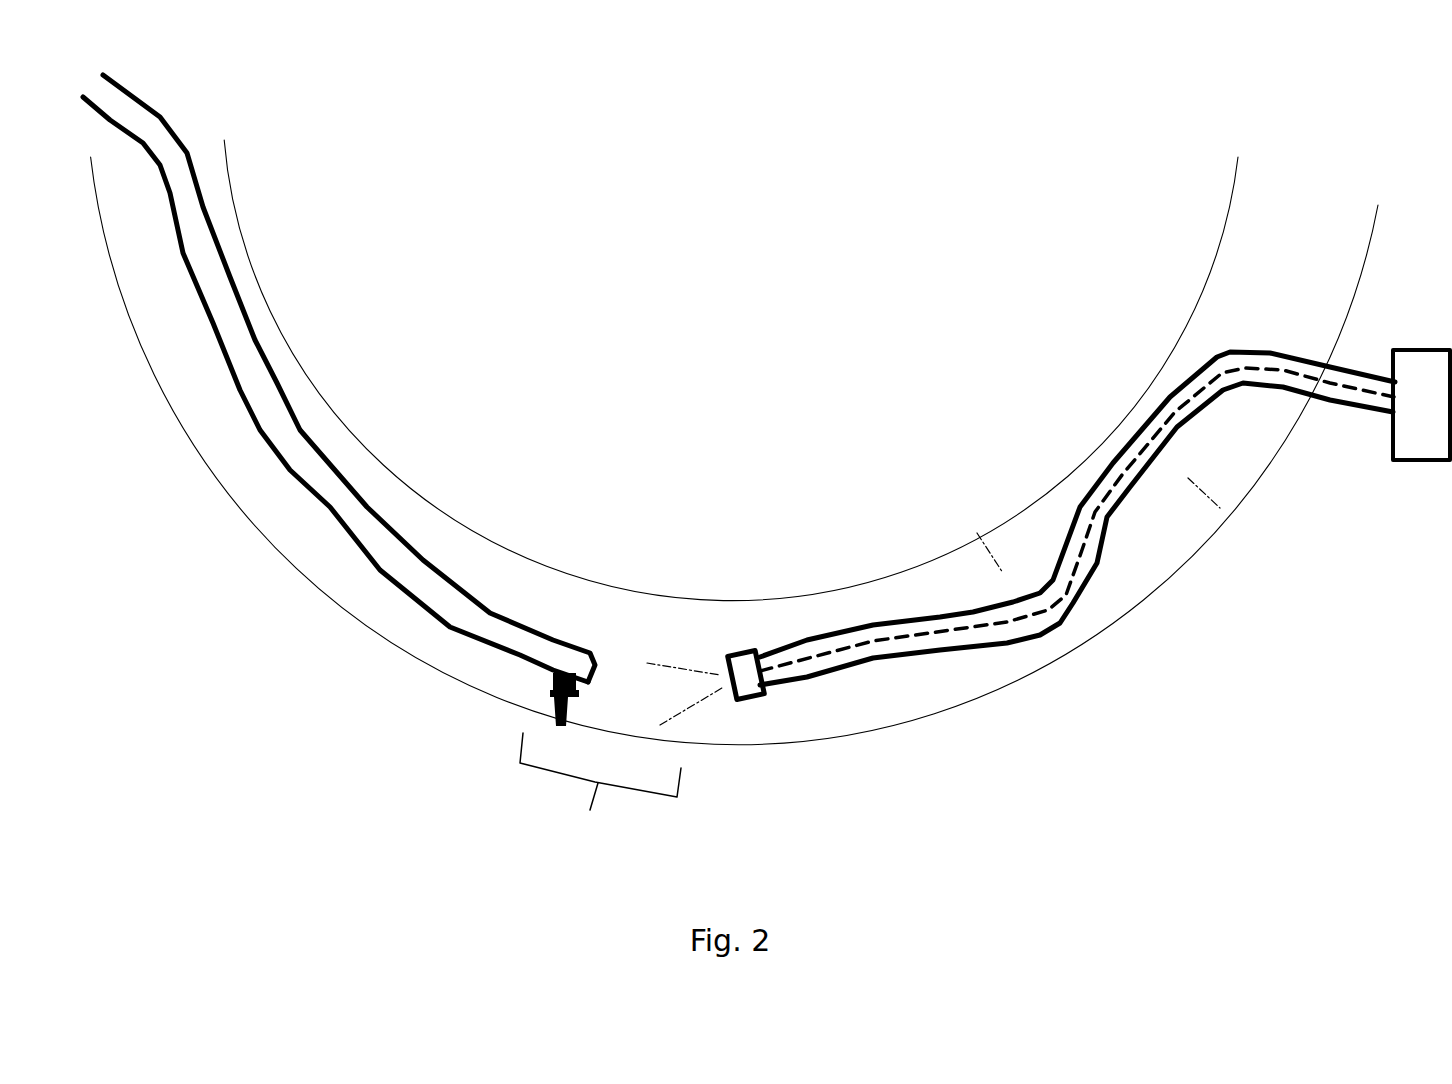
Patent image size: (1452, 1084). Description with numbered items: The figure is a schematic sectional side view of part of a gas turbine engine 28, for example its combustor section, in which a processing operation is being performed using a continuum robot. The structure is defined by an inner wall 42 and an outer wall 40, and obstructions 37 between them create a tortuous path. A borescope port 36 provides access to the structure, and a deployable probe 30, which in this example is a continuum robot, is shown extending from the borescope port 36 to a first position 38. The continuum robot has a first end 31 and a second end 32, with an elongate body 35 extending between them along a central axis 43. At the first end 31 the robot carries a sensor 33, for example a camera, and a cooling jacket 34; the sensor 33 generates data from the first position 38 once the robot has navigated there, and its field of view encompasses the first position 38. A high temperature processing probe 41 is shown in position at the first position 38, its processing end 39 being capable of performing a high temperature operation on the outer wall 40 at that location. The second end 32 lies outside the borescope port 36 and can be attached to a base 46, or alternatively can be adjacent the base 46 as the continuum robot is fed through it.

The part of a gas turbine engine 28 is at (612, 455).
The deployable probe 30 is at (915, 597).
The first end 31 is at (738, 637).
The second end 32 is at (1360, 420).
The sensor 33 is at (759, 658).
The cooling jacket 34 is at (750, 697).
The elongate body 35 is at (1000, 645).
The borescope port 36 is at (1312, 410).
The obstructions 37 is at (993, 550).
The first position 38 is at (600, 793).
The processing end 39 is at (533, 680).
The outer wall 40 is at (233, 522).
The high temperature processing probe 41 is at (370, 507).
The inner wall 42 is at (1192, 300).
The central axis 43 is at (870, 652).
The base 46 is at (1423, 350).